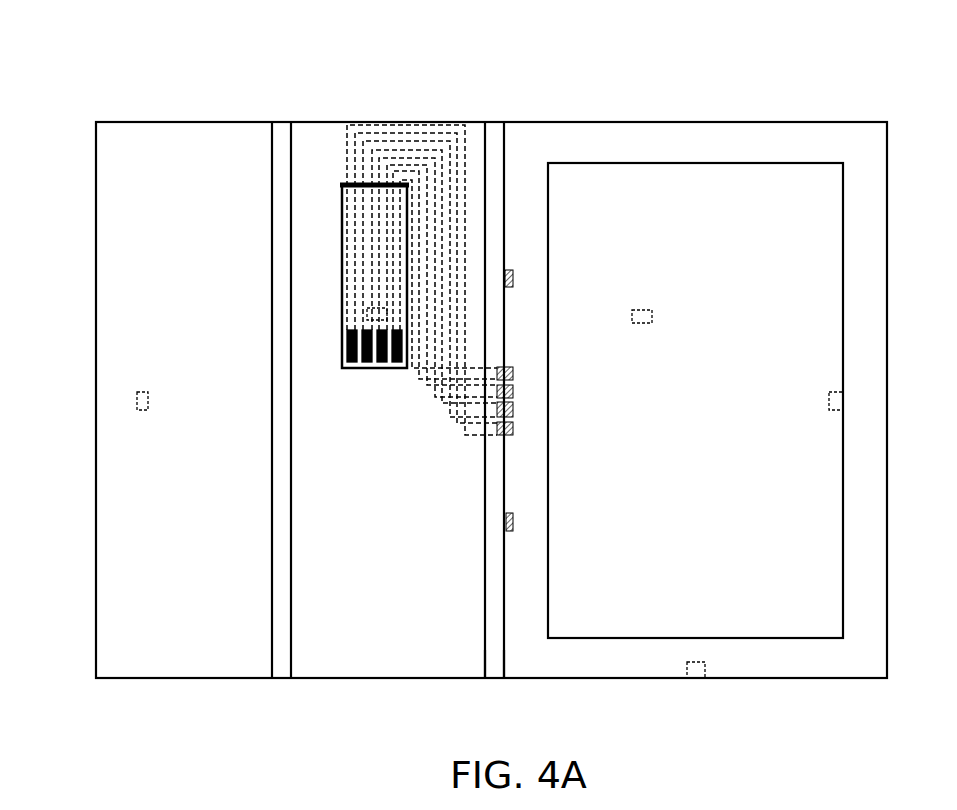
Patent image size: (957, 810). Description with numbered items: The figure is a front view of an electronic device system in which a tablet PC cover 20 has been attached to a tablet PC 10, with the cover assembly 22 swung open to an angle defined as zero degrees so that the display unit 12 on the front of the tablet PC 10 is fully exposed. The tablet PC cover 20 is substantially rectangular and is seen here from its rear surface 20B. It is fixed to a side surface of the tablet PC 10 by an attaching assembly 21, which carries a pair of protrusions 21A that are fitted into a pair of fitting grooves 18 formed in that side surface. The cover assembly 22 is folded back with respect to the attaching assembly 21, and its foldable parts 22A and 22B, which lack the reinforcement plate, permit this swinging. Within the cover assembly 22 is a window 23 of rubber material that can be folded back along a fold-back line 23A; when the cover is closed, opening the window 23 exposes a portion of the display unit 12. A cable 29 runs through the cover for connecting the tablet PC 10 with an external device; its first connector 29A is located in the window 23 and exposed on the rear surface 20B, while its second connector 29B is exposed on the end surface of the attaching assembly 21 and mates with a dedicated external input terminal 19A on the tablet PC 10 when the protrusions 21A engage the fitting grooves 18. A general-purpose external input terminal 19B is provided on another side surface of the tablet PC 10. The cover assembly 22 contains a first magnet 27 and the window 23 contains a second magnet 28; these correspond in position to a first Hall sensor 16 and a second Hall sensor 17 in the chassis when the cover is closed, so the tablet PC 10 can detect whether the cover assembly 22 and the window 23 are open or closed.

The tablet PC 10 is at (672, 105).
The display unit 12 is at (757, 200).
The first Hall sensor 16 is at (843, 398).
The second Hall sensor 17 is at (645, 325).
The fitting grooves 18 is at (588, 401).
The dedicated external input terminal 19A is at (517, 400).
The general-purpose external input terminal 19B is at (697, 680).
The tablet PC cover 20 is at (148, 70).
The rear surface 20B is at (115, 113).
The attaching assembly 21 is at (496, 679).
The protrusions 21A is at (513, 278).
The cover assembly 22 is at (480, 303).
The foldable part 22A is at (283, 135).
The foldable part 22B is at (474, 135).
The window 23 is at (317, 280).
The fold-back line 23A is at (342, 183).
The first magnet 27 is at (136, 398).
The second magnet 28 is at (371, 304).
The cable 29 is at (432, 442).
The first connector 29A is at (383, 363).
The second connector 29B is at (500, 440).